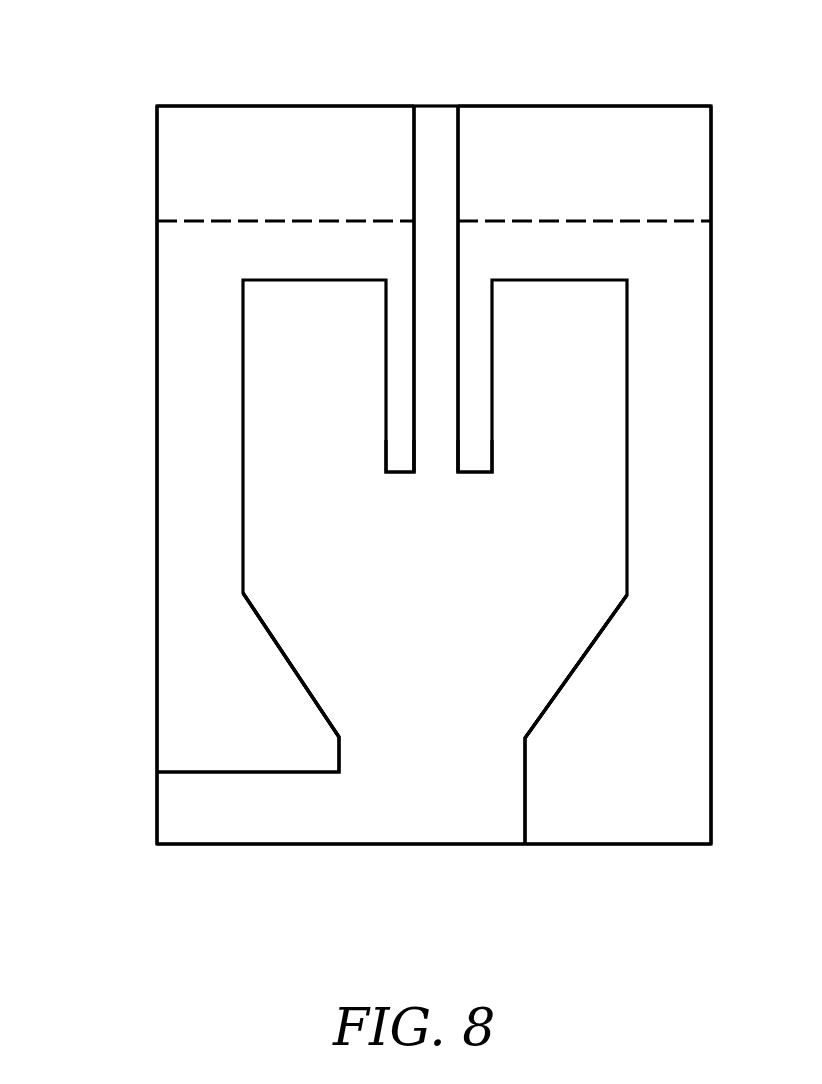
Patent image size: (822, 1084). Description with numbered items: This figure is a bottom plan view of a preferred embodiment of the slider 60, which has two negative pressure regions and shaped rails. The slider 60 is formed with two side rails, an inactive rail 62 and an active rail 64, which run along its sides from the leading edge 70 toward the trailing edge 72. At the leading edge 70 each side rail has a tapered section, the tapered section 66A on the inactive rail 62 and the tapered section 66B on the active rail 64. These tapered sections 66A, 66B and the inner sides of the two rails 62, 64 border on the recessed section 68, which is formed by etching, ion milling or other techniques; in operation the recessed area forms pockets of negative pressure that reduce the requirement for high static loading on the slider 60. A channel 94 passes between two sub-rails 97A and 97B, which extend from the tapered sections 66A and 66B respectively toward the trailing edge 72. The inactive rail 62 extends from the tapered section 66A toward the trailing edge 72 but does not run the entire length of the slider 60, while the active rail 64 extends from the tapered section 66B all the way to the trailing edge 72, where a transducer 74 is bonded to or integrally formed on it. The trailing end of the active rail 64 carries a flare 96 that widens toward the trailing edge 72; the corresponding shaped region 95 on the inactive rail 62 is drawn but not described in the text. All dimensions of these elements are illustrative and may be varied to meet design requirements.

The slider 60 is at (121, 506).
The inactive rail 62 is at (177, 381).
The active rail 64 is at (690, 437).
The tapered section 66A is at (189, 118).
The tapered section 66B is at (685, 127).
The recessed section 68 is at (447, 586).
The leading edge 70 is at (216, 80).
The trailing edge 72 is at (260, 845).
The transducer 74 is at (652, 845).
The channel 94 is at (435, 127).
The left outlet passage 95 is at (260, 692).
The flare 96 is at (597, 682).
The sub-rail 97A is at (398, 462).
The sub-rail 97B is at (470, 462).